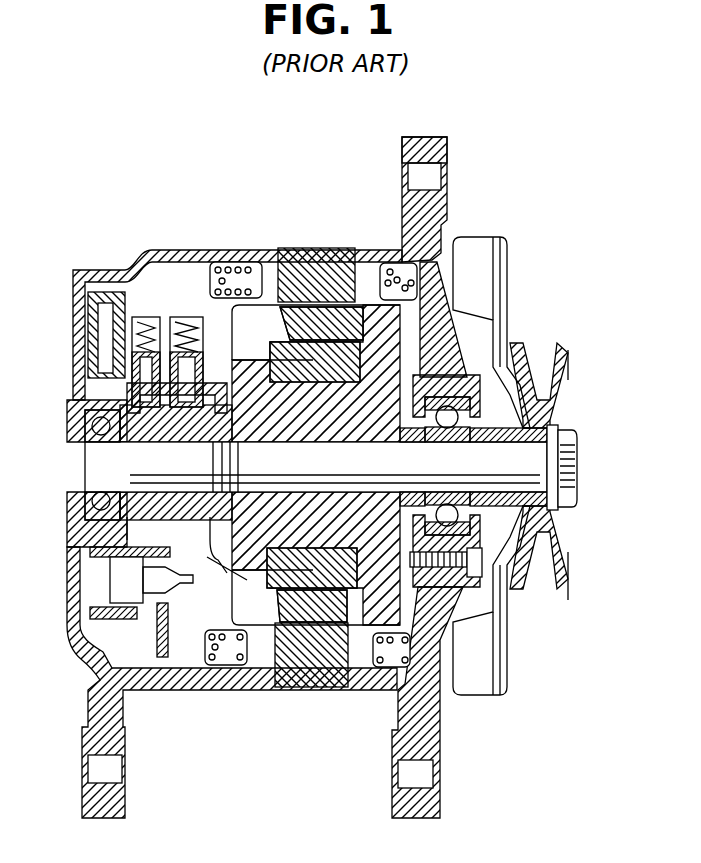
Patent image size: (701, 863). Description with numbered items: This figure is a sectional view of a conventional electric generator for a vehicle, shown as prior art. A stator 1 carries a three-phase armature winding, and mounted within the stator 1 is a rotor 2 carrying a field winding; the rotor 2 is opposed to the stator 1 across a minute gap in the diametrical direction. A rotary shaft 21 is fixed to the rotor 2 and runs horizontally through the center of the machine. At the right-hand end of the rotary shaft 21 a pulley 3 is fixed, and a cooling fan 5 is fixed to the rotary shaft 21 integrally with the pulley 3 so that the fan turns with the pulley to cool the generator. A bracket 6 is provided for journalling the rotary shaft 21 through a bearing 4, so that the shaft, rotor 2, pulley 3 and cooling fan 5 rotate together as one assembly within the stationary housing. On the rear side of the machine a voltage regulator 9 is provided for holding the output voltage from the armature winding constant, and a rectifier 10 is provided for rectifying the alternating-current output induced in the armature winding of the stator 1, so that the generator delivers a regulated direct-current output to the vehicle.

The stator 1 is at (312, 690).
The rotor 2 is at (258, 610).
The pulley 3 is at (537, 385).
The bearing 4 is at (445, 380).
The cooling fan 5 is at (482, 258).
The bracket 6 is at (445, 152).
The voltage regulator 9 is at (110, 315).
The rectifier 10 is at (100, 586).
The rotary shaft 21 is at (537, 460).